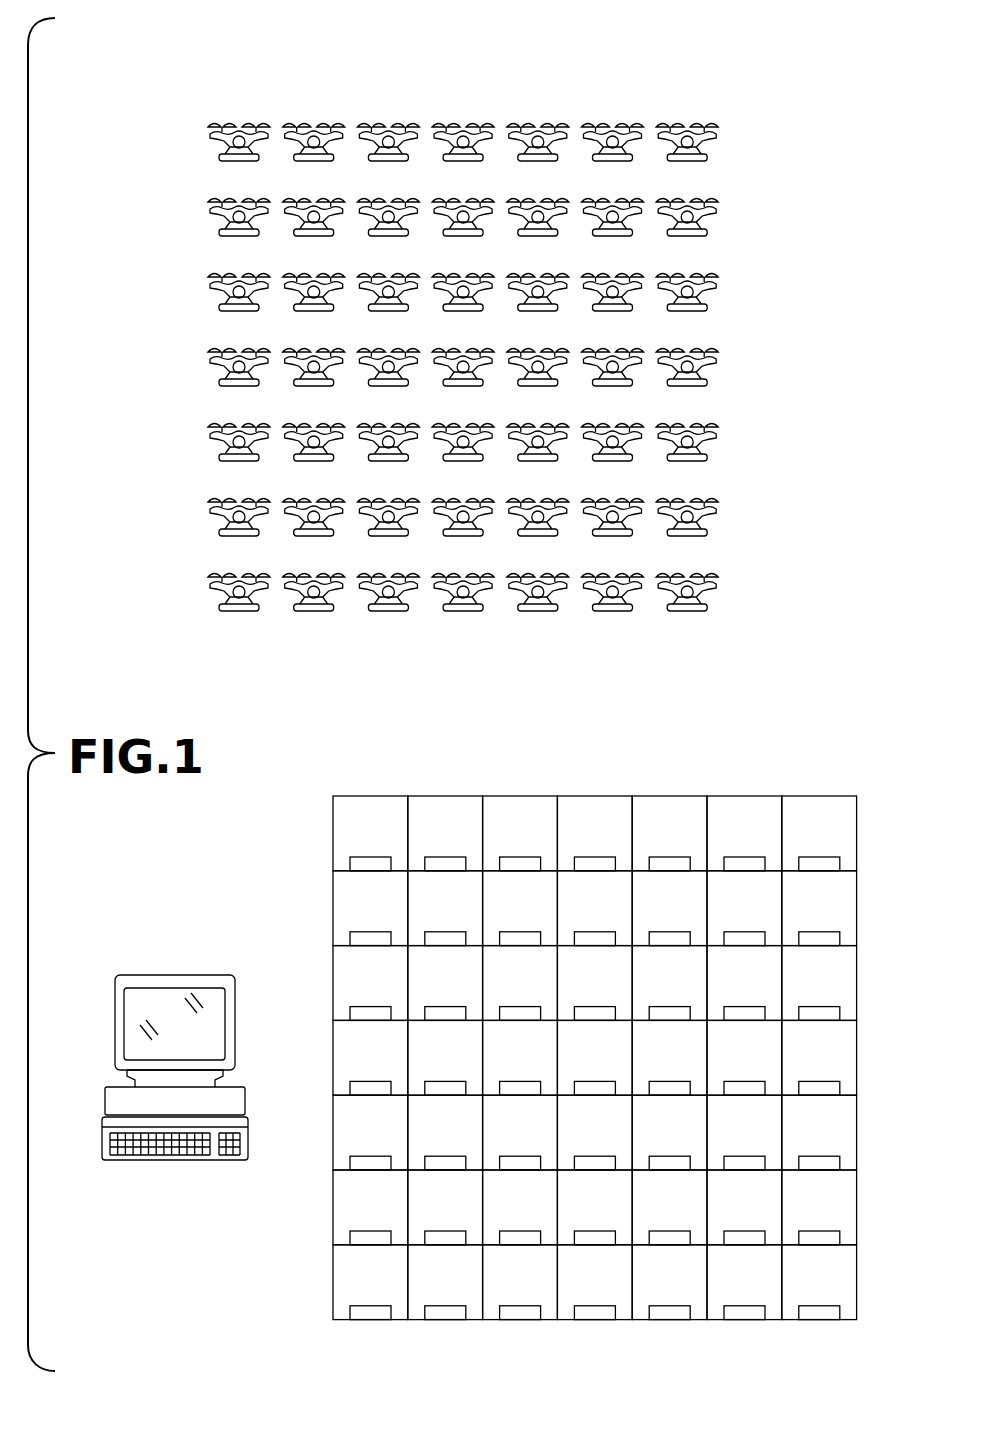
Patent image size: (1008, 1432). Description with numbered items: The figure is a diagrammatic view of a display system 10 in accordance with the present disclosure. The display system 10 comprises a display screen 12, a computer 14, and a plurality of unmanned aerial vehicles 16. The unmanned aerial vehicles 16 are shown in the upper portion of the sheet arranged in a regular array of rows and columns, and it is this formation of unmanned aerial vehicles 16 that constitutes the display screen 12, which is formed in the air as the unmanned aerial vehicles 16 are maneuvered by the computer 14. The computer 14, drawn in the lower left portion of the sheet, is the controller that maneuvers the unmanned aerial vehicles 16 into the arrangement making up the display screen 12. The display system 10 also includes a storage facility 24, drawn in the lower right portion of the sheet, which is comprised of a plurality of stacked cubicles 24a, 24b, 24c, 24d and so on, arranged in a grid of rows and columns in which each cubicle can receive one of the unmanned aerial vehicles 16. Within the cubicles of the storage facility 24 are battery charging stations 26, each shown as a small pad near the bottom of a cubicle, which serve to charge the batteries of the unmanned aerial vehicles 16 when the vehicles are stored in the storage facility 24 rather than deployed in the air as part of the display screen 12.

The display system 10 is at (764, 60).
The display screen 12 is at (275, 96).
The computer 14 is at (181, 958).
The unmanned aerial vehicle 16 is at (710, 140).
The storage facility 24 is at (746, 778).
The cubicle 24a is at (349, 1291).
The cubicle 24b is at (424, 1291).
The cubicle 24c is at (499, 1291).
The cubicle 24d is at (574, 1291).
The battery charging station 26 is at (371, 1313).